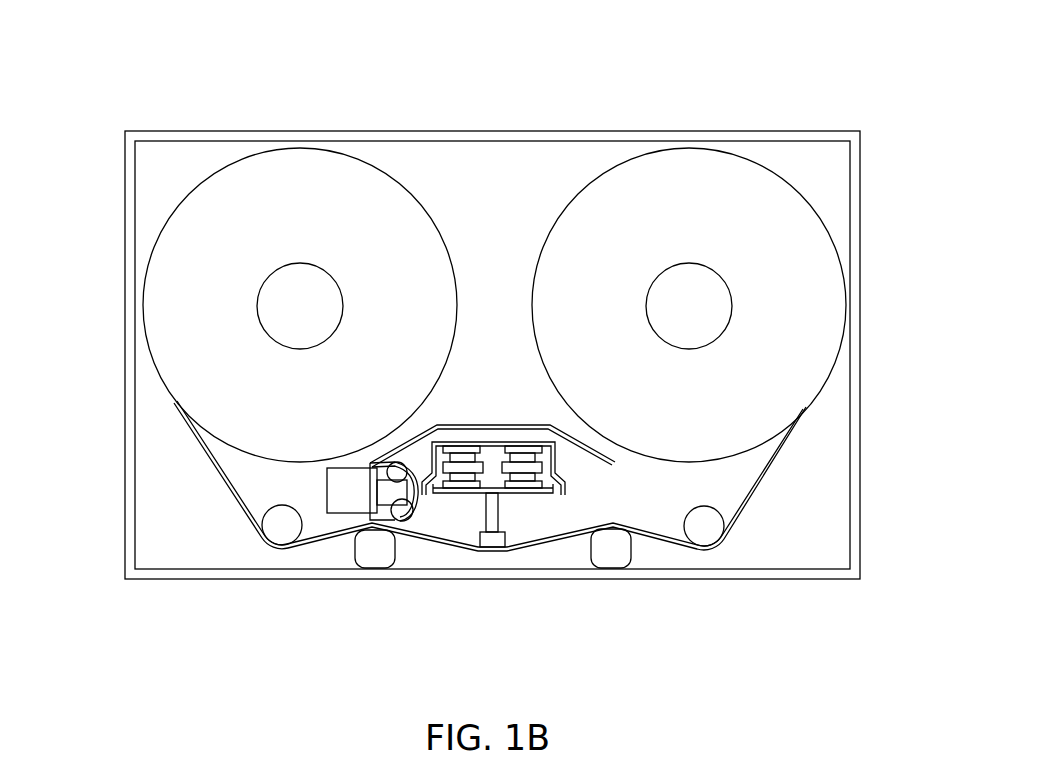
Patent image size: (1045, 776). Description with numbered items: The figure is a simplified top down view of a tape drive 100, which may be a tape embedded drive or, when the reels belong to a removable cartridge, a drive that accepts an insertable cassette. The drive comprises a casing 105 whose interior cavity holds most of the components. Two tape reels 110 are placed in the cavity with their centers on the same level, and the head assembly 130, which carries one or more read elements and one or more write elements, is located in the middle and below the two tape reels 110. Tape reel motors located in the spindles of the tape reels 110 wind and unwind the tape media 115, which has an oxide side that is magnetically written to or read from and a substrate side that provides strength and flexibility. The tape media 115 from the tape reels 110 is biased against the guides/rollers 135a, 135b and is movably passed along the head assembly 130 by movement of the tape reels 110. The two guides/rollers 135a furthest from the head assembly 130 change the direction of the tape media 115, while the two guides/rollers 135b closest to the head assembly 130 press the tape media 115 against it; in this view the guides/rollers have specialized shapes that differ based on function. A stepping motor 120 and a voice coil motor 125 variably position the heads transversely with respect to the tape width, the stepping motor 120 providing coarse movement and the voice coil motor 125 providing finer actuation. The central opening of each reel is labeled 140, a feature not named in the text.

The tape drive 100 is at (123, 65).
The casing 105 is at (523, 130).
The tape reels 110 is at (283, 150).
The tape media 115 is at (222, 488).
The stepping motor 120 is at (337, 513).
The voice coil motor 125 is at (467, 493).
The head assembly 130 is at (492, 547).
The guides/rollers 135a is at (280, 525).
The guides/rollers 135b is at (377, 553).
The reel hub 140 is at (316, 276).